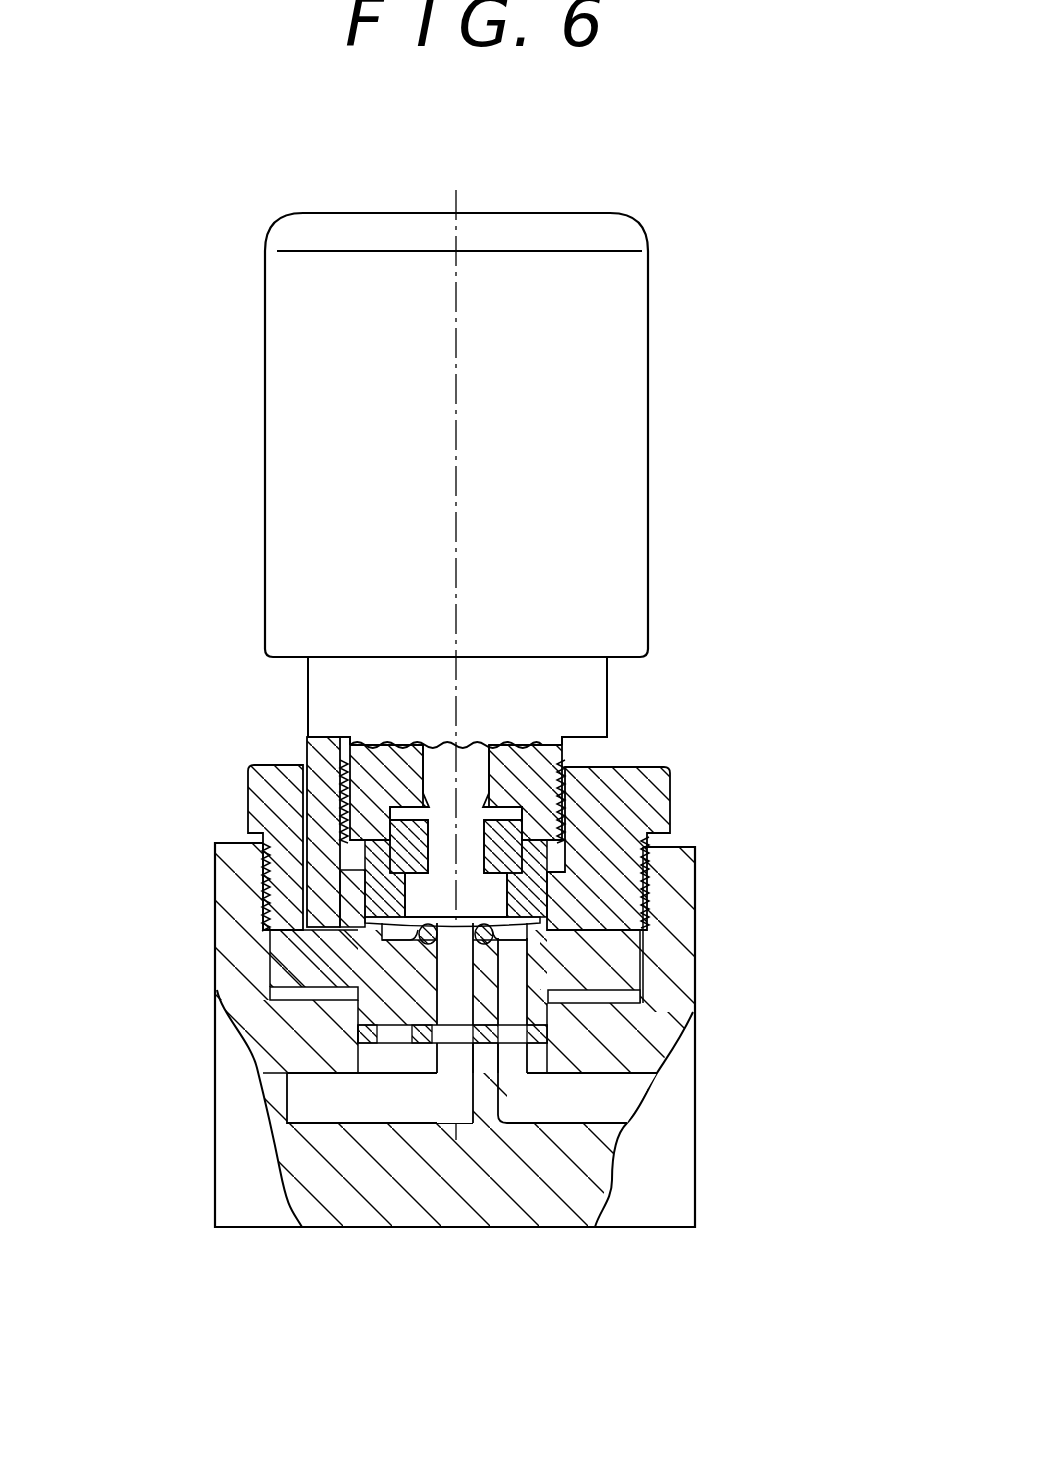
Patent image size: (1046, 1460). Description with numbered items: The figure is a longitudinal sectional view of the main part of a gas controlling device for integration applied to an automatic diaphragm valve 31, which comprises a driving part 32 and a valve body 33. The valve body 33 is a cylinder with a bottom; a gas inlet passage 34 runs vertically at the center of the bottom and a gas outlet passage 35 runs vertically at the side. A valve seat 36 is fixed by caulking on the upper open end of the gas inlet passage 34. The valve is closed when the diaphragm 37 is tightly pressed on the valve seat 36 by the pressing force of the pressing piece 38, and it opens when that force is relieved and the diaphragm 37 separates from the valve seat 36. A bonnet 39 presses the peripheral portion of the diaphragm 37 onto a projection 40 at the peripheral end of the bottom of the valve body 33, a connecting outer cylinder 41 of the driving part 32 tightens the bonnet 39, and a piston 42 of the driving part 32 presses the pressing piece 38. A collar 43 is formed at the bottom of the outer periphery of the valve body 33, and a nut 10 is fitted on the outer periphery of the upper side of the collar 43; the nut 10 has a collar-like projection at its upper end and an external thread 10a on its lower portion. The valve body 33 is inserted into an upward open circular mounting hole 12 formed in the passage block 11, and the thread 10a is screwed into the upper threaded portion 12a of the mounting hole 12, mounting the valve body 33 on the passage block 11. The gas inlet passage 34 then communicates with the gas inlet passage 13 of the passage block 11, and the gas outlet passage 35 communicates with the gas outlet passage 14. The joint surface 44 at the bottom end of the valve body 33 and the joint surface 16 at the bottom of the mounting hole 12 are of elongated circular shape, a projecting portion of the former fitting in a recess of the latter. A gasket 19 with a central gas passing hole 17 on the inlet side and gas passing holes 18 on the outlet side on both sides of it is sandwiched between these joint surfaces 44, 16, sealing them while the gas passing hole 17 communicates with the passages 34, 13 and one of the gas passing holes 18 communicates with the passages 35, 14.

The nut 10 is at (680, 806).
The external thread 10a is at (262, 858).
The passage block 11 is at (702, 1165).
The mounting hole 12 is at (680, 1053).
The upper threaded portion 12a is at (650, 888).
The gas inlet passage 13 is at (400, 1112).
The gas outlet passage 14 is at (580, 1110).
The joint surface 16 is at (455, 1150).
The gas passing hole 17 is at (485, 1080).
The gas passing holes 18 is at (375, 1090).
The gasket 19 is at (362, 1030).
The automatic diaphragm valve 31 is at (684, 557).
The driving part 32 is at (632, 374).
The valve body 33 is at (297, 832).
The gas inlet passage 34 is at (400, 990).
The gas outlet passage 35 is at (600, 1015).
The valve seat 36 is at (443, 968).
The diaphragm 37 is at (425, 921).
The pressing piece 38 is at (393, 845).
The bonnet 39 is at (547, 883).
The projection 40 is at (540, 947).
The connecting outer cylinder 41 is at (672, 766).
The piston 42 is at (477, 770).
The collar 43 is at (540, 973).
The joint surface 44 is at (348, 1048).